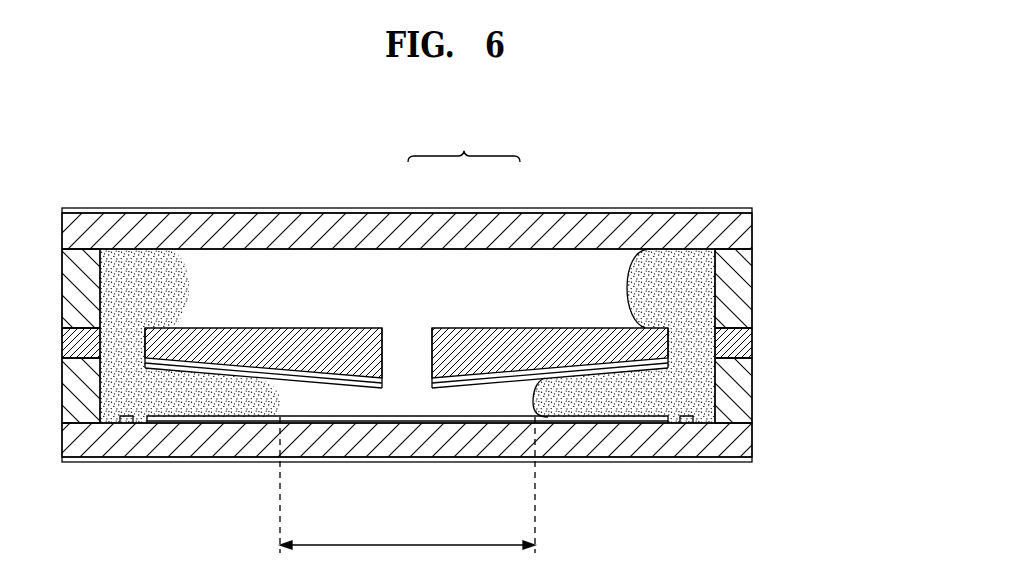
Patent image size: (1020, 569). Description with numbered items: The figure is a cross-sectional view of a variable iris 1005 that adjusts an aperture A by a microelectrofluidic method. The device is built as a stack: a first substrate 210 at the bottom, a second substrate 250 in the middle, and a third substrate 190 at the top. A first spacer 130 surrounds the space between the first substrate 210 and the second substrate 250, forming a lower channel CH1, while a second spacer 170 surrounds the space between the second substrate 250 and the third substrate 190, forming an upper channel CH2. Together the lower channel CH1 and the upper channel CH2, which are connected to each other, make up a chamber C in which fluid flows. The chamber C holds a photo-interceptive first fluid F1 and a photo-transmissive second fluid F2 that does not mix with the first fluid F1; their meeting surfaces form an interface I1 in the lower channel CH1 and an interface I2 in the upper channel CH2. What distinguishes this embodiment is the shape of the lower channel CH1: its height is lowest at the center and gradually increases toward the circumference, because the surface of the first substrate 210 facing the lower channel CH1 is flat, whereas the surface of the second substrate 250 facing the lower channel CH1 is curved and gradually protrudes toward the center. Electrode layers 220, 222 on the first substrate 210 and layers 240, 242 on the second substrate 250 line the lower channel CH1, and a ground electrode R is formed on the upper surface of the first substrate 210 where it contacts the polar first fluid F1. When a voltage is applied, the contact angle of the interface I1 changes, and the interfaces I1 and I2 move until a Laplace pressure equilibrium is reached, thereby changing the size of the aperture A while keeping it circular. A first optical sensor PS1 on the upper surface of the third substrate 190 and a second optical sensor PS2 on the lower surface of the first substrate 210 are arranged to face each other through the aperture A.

The variable iris 1005 is at (733, 187).
The first optical sensor PS1 is at (752, 210).
The third substrate 190 is at (738, 237).
The second spacer 170 is at (746, 297).
The second substrate 250 is at (740, 352).
The first spacer 130 is at (735, 400).
The first substrate 210 is at (738, 441).
The second optical sensor PS2 is at (752, 462).
The first electrode layer on cantilever 240 is at (165, 364).
The second layer on cantilever 242 is at (193, 370).
The lower electrode layer 220 is at (577, 423).
The lower insulating layer 222 is at (603, 421).
The ground electrode R is at (686, 423).
The interface in the lower channel I1 is at (531, 392).
The interface in the upper channel I2 is at (628, 282).
The first fluid F1 is at (407, 336).
The second fluid F2 is at (405, 287).
The chamber C is at (464, 141).
The lower channel CH1 is at (472, 398).
The upper channel CH2 is at (507, 275).
The aperture A is at (407, 485).